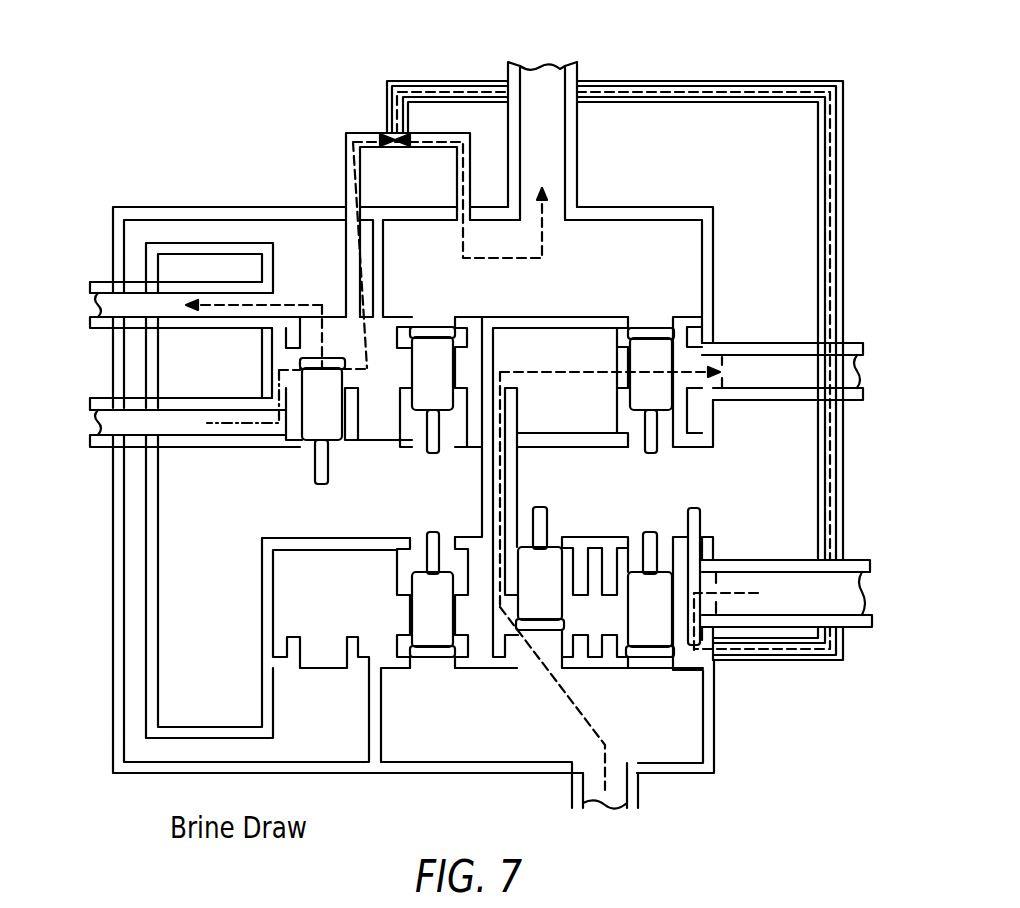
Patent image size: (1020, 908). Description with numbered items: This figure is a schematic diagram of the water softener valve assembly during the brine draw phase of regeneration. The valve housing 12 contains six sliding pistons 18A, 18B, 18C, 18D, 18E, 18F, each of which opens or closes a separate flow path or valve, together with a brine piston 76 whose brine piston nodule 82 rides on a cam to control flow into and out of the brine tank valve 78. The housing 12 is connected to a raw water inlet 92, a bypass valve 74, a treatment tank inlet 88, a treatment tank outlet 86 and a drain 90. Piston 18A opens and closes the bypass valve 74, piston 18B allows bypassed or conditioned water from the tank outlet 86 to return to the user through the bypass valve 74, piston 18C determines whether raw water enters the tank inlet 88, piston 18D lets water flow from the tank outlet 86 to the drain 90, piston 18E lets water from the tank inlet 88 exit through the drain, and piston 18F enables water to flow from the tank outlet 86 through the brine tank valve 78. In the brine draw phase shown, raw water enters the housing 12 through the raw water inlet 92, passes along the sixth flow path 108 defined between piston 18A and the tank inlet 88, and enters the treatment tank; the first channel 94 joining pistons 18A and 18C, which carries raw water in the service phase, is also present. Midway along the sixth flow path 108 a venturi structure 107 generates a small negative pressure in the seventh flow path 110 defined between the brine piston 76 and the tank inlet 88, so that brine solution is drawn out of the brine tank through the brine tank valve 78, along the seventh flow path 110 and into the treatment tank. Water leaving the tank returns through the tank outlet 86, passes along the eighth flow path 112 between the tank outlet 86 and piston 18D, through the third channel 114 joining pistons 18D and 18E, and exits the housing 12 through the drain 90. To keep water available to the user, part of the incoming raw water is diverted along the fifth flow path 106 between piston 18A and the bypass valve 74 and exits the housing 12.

The valve housing 12 is at (860, 158).
The bypass valve 74 is at (96, 305).
The brine piston 76 is at (696, 522).
The brine tank valve 78 is at (867, 588).
The brine piston nodule 82 is at (692, 512).
The treatment tank outlet 86 is at (597, 806).
The treatment tank inlet 88 is at (548, 62).
The drain 90 is at (863, 365).
The raw water inlet 92 is at (96, 425).
The first channel 94 is at (377, 386).
The fifth flow path 106 is at (310, 313).
The venturi structure 107 is at (387, 133).
The sixth flow path 108 is at (346, 170).
The seventh flow path 110 is at (831, 263).
The eighth flow path 112 is at (555, 684).
The third channel 114 is at (560, 374).
The piston 18A is at (287, 421).
The piston 18B is at (432, 600).
The piston 18C is at (441, 385).
The piston 18D is at (540, 568).
The piston 18E is at (659, 385).
The piston 18F is at (650, 594).